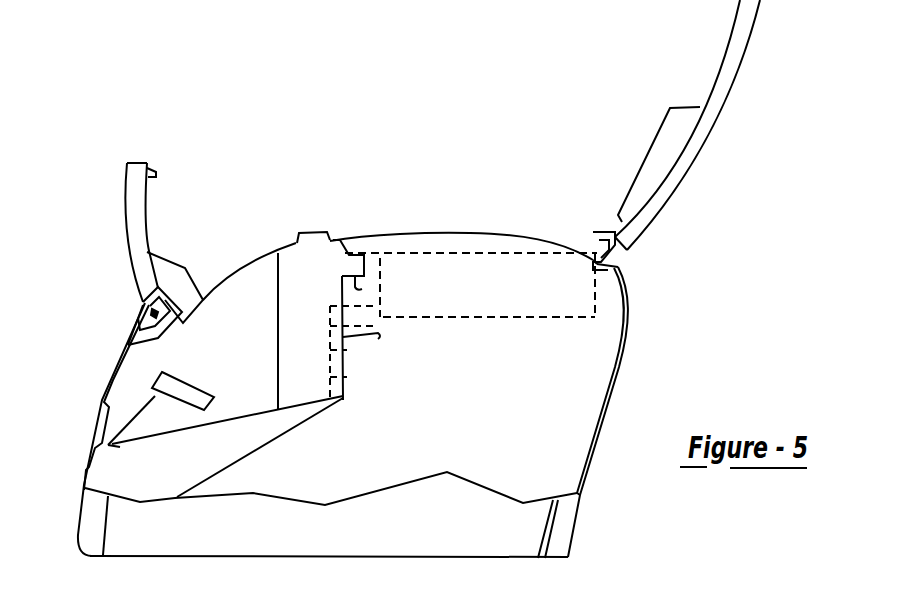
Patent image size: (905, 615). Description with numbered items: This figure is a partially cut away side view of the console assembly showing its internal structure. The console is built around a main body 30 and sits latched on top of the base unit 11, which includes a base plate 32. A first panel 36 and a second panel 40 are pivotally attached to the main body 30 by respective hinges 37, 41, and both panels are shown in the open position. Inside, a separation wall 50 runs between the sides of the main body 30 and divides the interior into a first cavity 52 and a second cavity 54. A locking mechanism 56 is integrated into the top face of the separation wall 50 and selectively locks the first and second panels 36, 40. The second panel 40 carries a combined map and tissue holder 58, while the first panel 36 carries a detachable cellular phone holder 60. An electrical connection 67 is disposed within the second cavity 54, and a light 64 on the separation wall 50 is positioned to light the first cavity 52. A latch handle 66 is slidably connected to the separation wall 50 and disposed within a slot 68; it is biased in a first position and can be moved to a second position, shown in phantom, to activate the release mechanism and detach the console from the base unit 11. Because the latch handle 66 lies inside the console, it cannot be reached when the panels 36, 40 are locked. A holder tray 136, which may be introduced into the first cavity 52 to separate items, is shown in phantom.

The base unit 11 is at (405, 2).
The main body 30 is at (630, 356).
The base plate 32 is at (313, 0).
The first panel 36 is at (122, 222).
The hinge 37 is at (153, 315).
The second panel 40 is at (733, 97).
The hinge 41 is at (598, 243).
The separation wall 50 is at (290, 248).
The first cavity 52 is at (481, 363).
The second cavity 54 is at (236, 310).
The locking mechanism 56 is at (305, 232).
The combined map and tissue holder 58 is at (657, 150).
The detachable cellular phone holder 60 is at (168, 270).
The light 64 is at (358, 283).
The latch handle 66 is at (367, 337).
The electrical connection 67 is at (150, 400).
The slot 68 is at (342, 380).
The holder tray 136 is at (567, 292).